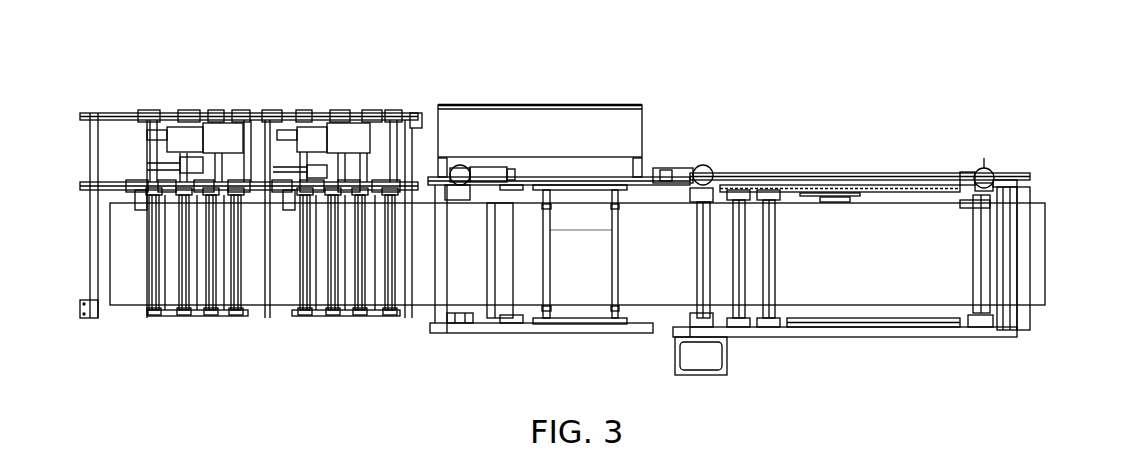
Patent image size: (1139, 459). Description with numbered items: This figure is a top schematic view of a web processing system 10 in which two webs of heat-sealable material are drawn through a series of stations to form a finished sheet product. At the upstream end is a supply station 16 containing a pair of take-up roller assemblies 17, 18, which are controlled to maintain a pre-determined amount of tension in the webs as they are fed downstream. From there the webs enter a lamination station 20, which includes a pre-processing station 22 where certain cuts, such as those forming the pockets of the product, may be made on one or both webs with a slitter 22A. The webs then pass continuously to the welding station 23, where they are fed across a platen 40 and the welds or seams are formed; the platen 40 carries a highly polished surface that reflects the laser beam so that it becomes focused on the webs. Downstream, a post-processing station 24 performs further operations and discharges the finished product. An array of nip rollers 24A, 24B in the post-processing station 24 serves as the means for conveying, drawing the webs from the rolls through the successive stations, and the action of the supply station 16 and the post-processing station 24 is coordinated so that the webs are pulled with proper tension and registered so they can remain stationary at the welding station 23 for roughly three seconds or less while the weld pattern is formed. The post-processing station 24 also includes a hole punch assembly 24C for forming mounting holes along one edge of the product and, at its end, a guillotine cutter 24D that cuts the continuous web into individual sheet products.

The web processing system 10 is at (600, 112).
The supply station 16 is at (251, 171).
The take-up roller assembly 17 is at (215, 280).
The take-up roller assembly 18 is at (352, 280).
The lamination station 20 is at (546, 251).
The pre-processing station 22 is at (541, 360).
The slitter 22A is at (514, 342).
The welding station 23 is at (602, 293).
The post-processing station 24 is at (841, 287).
The nip roller 24A is at (835, 178).
The nip roller 24B is at (938, 232).
The hole punch assembly 24C is at (853, 164).
The guillotine cutter 24D is at (1058, 230).
The platen 40 is at (592, 265).